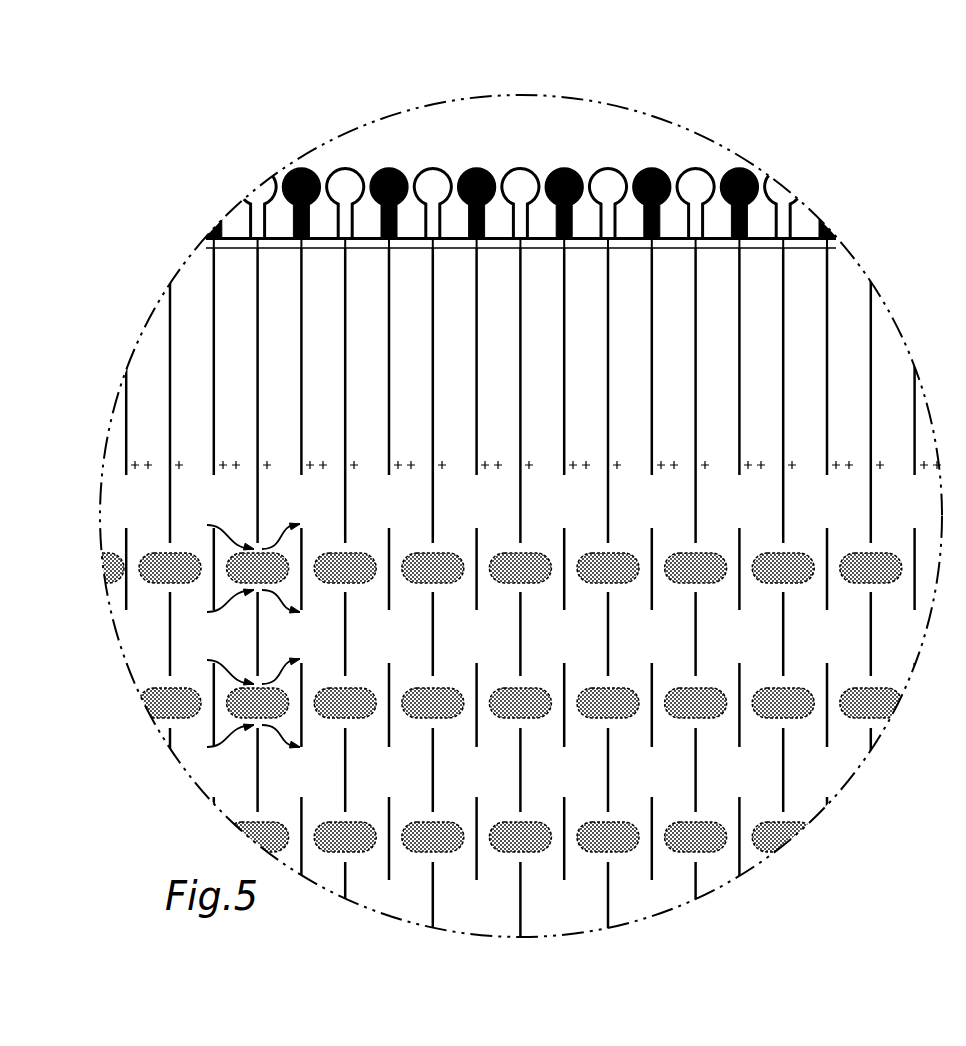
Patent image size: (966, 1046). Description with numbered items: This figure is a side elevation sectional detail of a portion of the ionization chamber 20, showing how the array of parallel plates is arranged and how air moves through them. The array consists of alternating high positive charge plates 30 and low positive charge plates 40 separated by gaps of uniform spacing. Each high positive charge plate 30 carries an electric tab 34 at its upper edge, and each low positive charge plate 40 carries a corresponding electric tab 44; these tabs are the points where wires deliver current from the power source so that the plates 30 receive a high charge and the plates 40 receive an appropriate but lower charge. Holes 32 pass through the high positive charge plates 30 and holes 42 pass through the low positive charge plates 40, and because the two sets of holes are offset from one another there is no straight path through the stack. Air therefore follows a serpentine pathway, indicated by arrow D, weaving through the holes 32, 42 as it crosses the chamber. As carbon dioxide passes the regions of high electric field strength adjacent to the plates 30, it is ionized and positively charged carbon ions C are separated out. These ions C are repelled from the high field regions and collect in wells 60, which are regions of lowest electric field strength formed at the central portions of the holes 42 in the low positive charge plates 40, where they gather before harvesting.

The ionization chamber 20 is at (556, 324).
The high positive charge plate 30 is at (127, 428).
The holes in high positive charge plates 32 is at (212, 498).
The electric tab 34 is at (301, 168).
The low positive charge plate 40 is at (171, 417).
The holes in low positive charge plates 42 is at (349, 589).
The electric tab 44 is at (345, 180).
The well 60 is at (452, 562).
The carbon ions C is at (361, 562).
The airflow arrow D is at (230, 532).